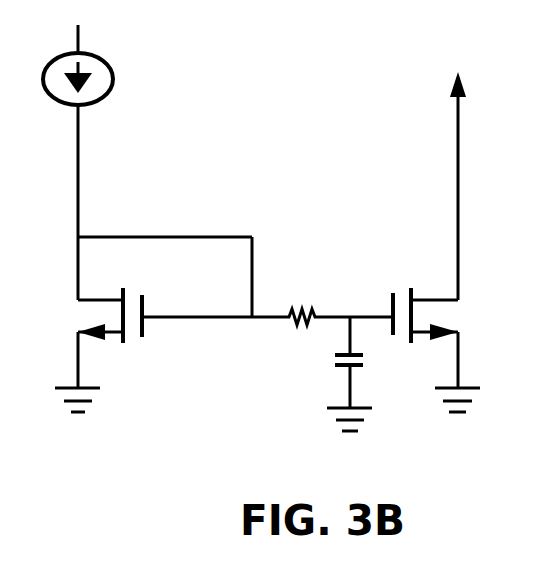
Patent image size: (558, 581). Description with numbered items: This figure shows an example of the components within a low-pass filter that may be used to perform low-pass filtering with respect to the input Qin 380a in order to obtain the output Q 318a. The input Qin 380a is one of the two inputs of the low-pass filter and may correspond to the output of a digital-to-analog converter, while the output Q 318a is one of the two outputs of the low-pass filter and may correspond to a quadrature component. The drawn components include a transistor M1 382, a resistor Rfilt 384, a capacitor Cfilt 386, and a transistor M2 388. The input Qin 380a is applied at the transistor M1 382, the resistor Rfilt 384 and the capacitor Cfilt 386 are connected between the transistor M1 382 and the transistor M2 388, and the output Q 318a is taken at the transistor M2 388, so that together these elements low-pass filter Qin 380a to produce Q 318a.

The Qin input 380a is at (78, 131).
The Q output 318a is at (458, 142).
The transistor M1 382 is at (171, 324).
The resistor Rfilt 384 is at (340, 304).
The capacitor Cfilt 386 is at (322, 374).
The transistor M2 388 is at (448, 350).